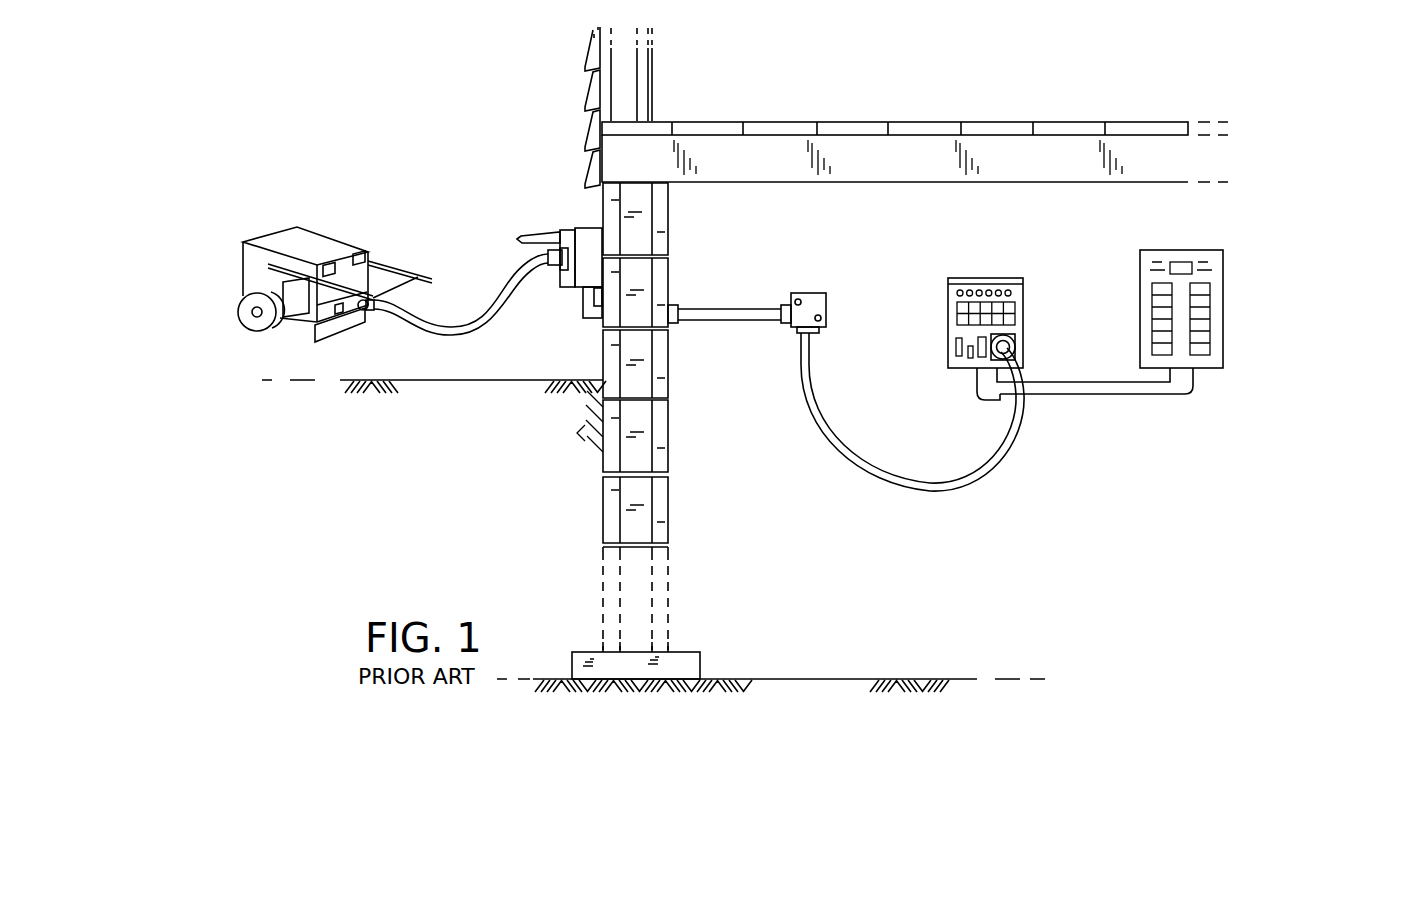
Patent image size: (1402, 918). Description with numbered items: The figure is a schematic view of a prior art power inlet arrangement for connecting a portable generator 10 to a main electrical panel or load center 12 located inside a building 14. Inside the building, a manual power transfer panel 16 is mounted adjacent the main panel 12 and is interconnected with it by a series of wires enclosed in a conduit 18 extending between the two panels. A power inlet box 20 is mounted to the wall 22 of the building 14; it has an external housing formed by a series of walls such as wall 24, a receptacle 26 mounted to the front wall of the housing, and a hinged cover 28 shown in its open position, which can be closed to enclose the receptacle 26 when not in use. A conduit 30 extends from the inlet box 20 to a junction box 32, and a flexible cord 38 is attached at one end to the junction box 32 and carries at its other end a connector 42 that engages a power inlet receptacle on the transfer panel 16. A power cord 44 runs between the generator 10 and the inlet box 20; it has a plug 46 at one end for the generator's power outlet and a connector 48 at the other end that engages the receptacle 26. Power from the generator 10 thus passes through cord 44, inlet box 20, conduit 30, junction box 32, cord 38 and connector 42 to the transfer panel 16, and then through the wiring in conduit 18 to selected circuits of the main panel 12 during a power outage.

The portable generator 10 is at (325, 210).
The main electrical panel 12 is at (1250, 290).
The building 14 is at (560, 46).
The manual power transfer panel 16 is at (987, 263).
The conduit 18 is at (1103, 400).
The power inlet box 20 is at (570, 198).
The wall 22 is at (602, 362).
The wall of housing 24 is at (590, 278).
The receptacle 26 is at (562, 288).
The cover 28 is at (548, 231).
The conduit 30 is at (695, 307).
The junction box 32 is at (808, 292).
The flexible cord 38 is at (935, 492).
The connector 42 is at (1013, 332).
The power cord 44 is at (447, 340).
The plug 46 is at (380, 300).
The connector 48 is at (540, 278).